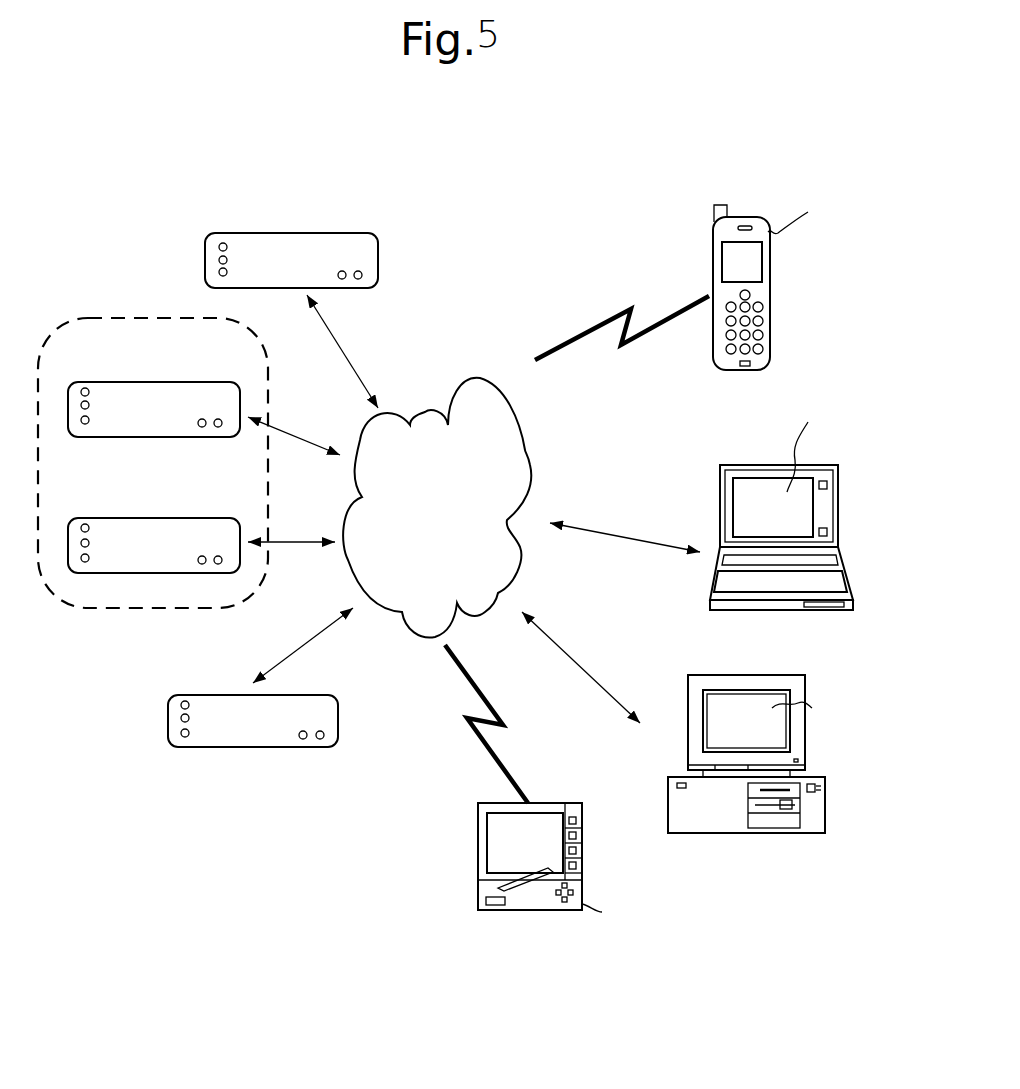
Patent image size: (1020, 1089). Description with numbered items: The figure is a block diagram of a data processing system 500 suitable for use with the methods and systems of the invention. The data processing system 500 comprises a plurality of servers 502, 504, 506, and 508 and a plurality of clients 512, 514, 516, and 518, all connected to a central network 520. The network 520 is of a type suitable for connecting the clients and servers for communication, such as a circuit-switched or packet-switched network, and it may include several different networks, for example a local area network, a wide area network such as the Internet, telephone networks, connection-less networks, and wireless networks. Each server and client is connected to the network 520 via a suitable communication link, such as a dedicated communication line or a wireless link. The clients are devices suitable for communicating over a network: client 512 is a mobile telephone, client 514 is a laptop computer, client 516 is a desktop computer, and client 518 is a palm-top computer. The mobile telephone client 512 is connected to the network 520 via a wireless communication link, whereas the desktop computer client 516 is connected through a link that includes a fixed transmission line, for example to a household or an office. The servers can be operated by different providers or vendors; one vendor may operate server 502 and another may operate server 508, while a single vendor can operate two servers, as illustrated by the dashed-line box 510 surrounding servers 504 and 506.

The data processing system 500 is at (684, 126).
The server 502 is at (285, 250).
The server 504 is at (138, 410).
The server 506 is at (134, 537).
The server 508 is at (247, 727).
The dashed-line box 510 is at (130, 318).
The client 512 is at (771, 300).
The client 514 is at (840, 491).
The client 516 is at (828, 804).
The client 518 is at (550, 848).
The network 520 is at (527, 453).